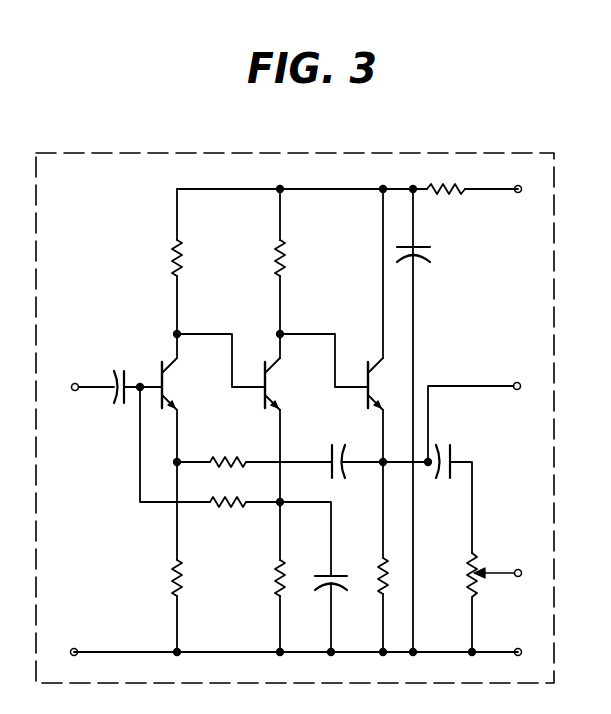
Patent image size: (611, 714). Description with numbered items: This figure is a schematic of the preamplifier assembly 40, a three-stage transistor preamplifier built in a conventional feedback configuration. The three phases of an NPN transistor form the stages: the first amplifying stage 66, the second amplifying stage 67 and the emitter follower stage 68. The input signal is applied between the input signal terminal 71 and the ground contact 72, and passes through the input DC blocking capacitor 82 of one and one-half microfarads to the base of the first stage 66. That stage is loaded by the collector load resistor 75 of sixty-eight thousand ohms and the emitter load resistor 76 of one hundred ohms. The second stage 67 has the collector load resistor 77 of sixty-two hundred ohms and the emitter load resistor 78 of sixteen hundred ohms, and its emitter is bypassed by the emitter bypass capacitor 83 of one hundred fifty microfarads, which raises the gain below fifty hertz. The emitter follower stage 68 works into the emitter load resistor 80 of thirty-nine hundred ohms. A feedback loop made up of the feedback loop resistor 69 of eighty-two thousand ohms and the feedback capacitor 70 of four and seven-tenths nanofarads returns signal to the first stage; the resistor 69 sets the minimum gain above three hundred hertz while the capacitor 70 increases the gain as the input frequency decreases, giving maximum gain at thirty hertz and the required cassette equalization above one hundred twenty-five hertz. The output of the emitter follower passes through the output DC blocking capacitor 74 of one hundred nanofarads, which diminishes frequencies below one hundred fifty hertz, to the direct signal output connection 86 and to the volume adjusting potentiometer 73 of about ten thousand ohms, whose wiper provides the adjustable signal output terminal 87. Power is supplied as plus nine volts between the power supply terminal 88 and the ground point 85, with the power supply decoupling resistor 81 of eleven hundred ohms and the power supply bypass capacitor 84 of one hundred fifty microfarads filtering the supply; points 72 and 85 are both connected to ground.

The preamplifier assembly 40 is at (441, 139).
The first amplifying stage 66 is at (160, 370).
The second amplifying stage 67 is at (264, 368).
The emitter follower stage 68 is at (367, 372).
The feedback loop resistor 69 is at (222, 455).
The feedback capacitor 70 is at (332, 445).
The input signal terminal 71 is at (76, 381).
The ground contact 72 is at (73, 646).
The volume adjusting potentiometer 73 is at (468, 567).
The output DC blocking capacitor 74 is at (456, 452).
The collector load resistor 75 is at (172, 258).
The emitter load resistor 76 is at (172, 581).
The collector load resistor 77 is at (275, 258).
The emitter load resistor 78 is at (275, 581).
The emitter load resistor 80 is at (380, 566).
The power supply decoupling resistor 81 is at (444, 186).
The input DC blocking capacitor 82 is at (102, 419).
The emitter bypass capacitor 83 is at (335, 586).
The power supply bypass capacitor 84 is at (431, 254).
The ground point 85 is at (535, 626).
The direct signal output connection 86 is at (521, 382).
The adjustable signal output terminal 87 is at (519, 567).
The power supply terminal 88 is at (523, 186).